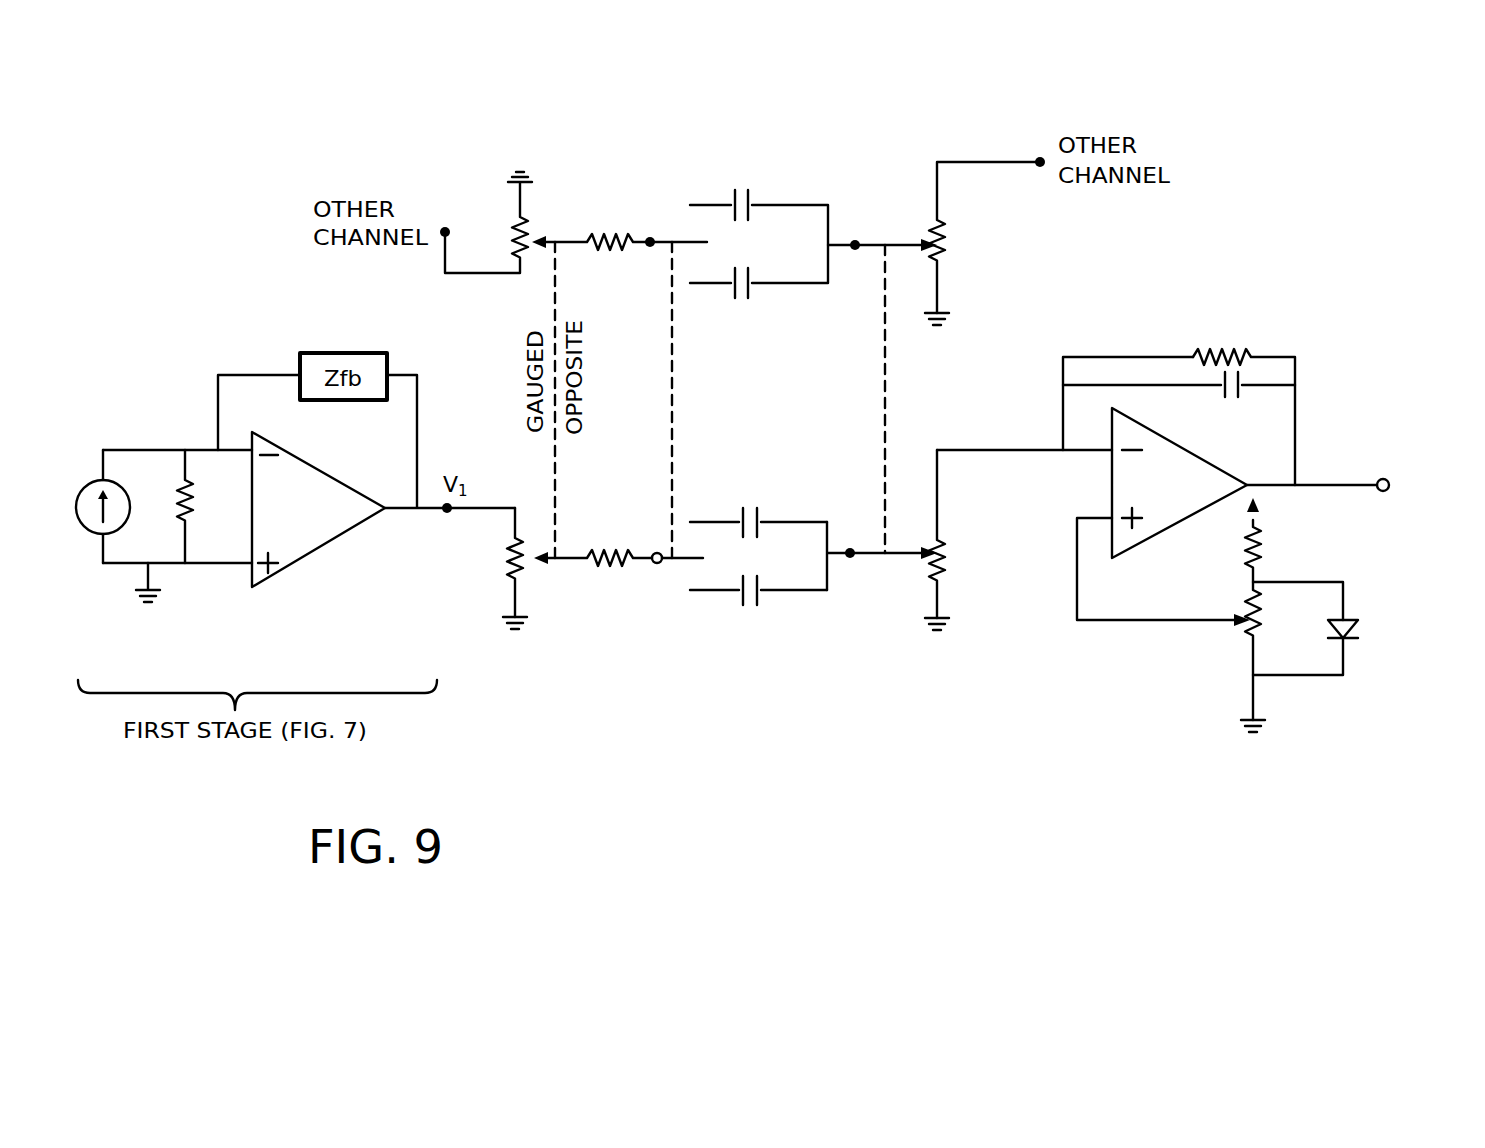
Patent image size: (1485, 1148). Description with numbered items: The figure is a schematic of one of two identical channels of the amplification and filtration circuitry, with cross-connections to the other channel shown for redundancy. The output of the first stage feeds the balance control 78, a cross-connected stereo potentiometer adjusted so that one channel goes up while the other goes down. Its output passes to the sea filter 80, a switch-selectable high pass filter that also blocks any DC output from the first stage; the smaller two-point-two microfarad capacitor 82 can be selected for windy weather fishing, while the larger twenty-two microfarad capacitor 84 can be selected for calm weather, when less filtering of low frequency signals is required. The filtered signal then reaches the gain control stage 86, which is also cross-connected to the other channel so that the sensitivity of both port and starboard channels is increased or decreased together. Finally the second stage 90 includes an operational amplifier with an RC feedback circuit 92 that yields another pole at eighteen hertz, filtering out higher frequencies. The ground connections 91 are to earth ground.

The balance control 78 is at (550, 680).
The sea filter 80 is at (746, 449).
The 2.2 μF capacitor 82 is at (762, 522).
The 22 μF capacitor 84 is at (740, 593).
The gain control stage 86 is at (992, 680).
The second stage 90 is at (1226, 565).
The ground connections 91 is at (535, 183).
The RC feedback circuit 92 is at (1309, 386).